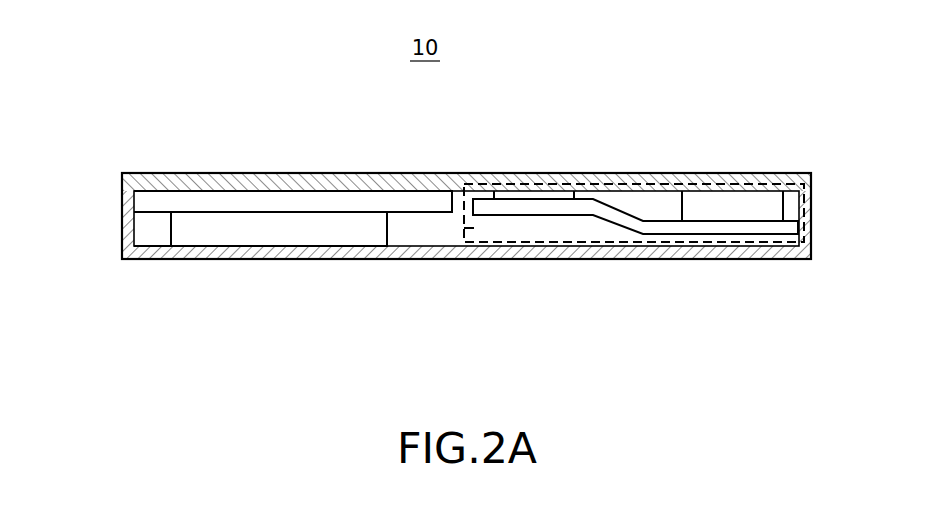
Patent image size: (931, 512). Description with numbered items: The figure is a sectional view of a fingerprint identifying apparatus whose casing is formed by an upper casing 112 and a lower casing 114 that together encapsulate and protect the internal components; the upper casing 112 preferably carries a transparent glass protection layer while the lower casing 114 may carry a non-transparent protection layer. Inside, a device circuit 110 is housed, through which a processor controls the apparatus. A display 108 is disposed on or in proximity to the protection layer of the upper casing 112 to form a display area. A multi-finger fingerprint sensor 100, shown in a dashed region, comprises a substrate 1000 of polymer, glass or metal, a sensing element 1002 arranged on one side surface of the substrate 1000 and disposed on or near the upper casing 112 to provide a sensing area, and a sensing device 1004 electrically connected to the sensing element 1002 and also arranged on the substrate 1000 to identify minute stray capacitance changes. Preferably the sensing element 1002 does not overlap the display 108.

The multi-finger fingerprint sensor 100 is at (463, 230).
The substrate 1000 is at (562, 210).
The sensing element 1002 is at (523, 195).
The sensing device 1004 is at (727, 203).
The display 108 is at (148, 203).
The device circuit 110 is at (175, 232).
The upper casing 112 is at (325, 183).
The lower casing 114 is at (312, 252).